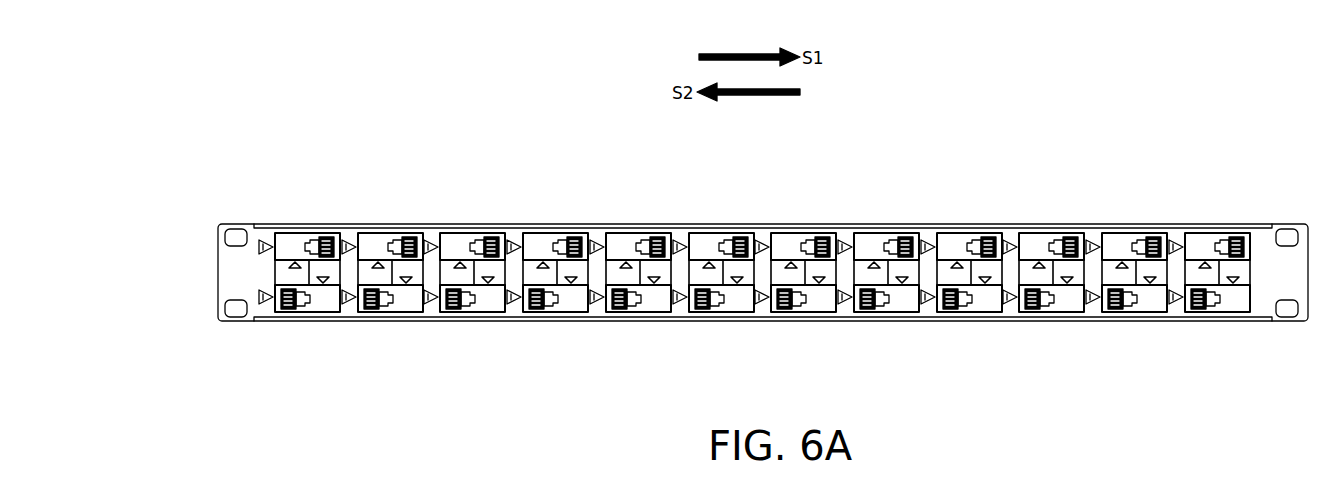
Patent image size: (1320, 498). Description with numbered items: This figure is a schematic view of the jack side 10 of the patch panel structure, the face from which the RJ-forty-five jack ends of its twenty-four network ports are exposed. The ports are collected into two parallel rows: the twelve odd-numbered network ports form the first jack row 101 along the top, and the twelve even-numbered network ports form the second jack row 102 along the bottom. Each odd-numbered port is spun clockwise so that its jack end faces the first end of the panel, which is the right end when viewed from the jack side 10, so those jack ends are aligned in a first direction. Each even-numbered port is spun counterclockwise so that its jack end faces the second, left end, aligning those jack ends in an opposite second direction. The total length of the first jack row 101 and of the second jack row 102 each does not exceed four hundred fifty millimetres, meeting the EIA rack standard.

The jack side 10 is at (268, 198).
The first jack row 101 is at (268, 232).
The second jack row 102 is at (268, 315).